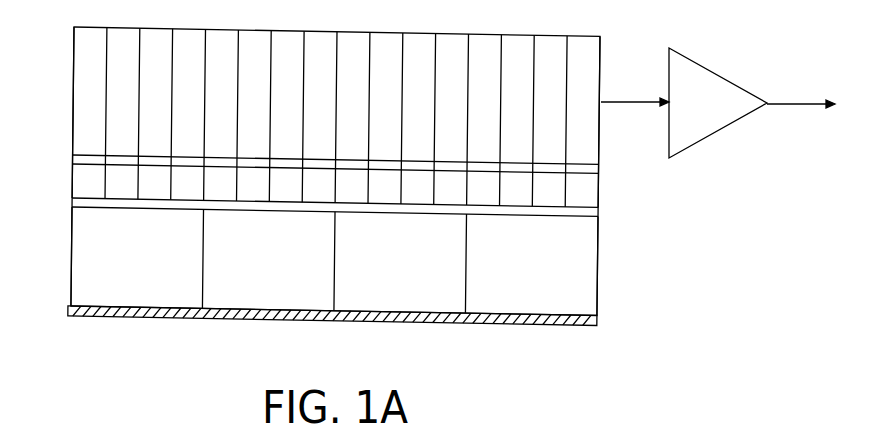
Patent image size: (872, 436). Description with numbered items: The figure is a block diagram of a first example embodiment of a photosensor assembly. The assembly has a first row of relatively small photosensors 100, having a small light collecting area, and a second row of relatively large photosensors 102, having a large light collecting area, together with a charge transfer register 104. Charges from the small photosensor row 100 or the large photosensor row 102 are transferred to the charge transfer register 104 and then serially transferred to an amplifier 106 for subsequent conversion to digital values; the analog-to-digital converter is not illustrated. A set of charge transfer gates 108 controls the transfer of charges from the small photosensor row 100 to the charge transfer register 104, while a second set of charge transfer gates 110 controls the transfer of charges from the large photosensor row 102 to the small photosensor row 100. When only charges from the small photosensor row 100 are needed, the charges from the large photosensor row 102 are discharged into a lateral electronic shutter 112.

The first row of relatively small photosensors 100 is at (601, 190).
The second row of relatively large photosensors 102 is at (601, 265).
The charge transfer register 104 is at (602, 46).
The amplifier 106 is at (724, 117).
The set of charge transfer gates 108 is at (72, 156).
The set of charge transfer gates 110 is at (72, 199).
The lateral electronic shutter 112 is at (70, 306).